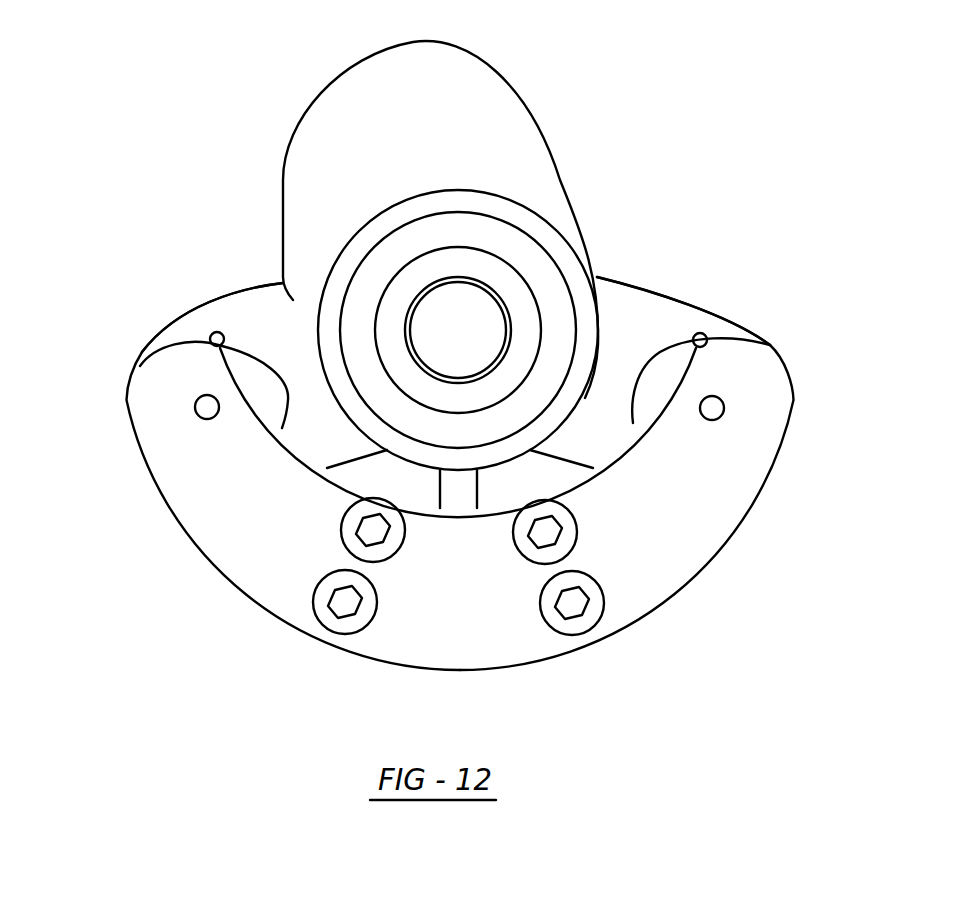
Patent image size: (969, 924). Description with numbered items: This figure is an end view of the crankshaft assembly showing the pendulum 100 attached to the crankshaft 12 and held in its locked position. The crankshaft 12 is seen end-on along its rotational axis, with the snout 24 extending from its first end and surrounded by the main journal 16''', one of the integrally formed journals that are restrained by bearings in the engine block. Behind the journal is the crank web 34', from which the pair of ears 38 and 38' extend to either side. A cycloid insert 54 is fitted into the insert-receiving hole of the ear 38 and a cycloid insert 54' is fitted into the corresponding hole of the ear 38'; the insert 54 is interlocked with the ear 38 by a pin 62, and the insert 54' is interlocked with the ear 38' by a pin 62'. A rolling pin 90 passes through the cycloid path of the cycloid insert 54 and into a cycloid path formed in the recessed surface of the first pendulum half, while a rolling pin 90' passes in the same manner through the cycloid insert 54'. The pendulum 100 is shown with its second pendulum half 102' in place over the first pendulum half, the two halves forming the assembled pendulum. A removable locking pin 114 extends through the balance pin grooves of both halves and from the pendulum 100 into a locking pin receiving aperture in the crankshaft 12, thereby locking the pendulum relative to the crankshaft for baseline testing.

The crank web 34' is at (466, 217).
The main journal 16''' is at (496, 284).
The crankshaft 12 is at (507, 277).
The snout 24 is at (520, 310).
The ear 38 is at (212, 268).
The ear 38' is at (683, 271).
The pin 62 is at (173, 283).
The pin 62' is at (753, 287).
The cycloid insert 54 is at (166, 369).
The cycloid insert 54' is at (738, 349).
The rolling pin 90 is at (153, 484).
The rolling pin 90' is at (771, 456).
The pendulum 100 is at (277, 537).
The second pendulum half 102' is at (636, 473).
The locking pin 114 is at (453, 498).